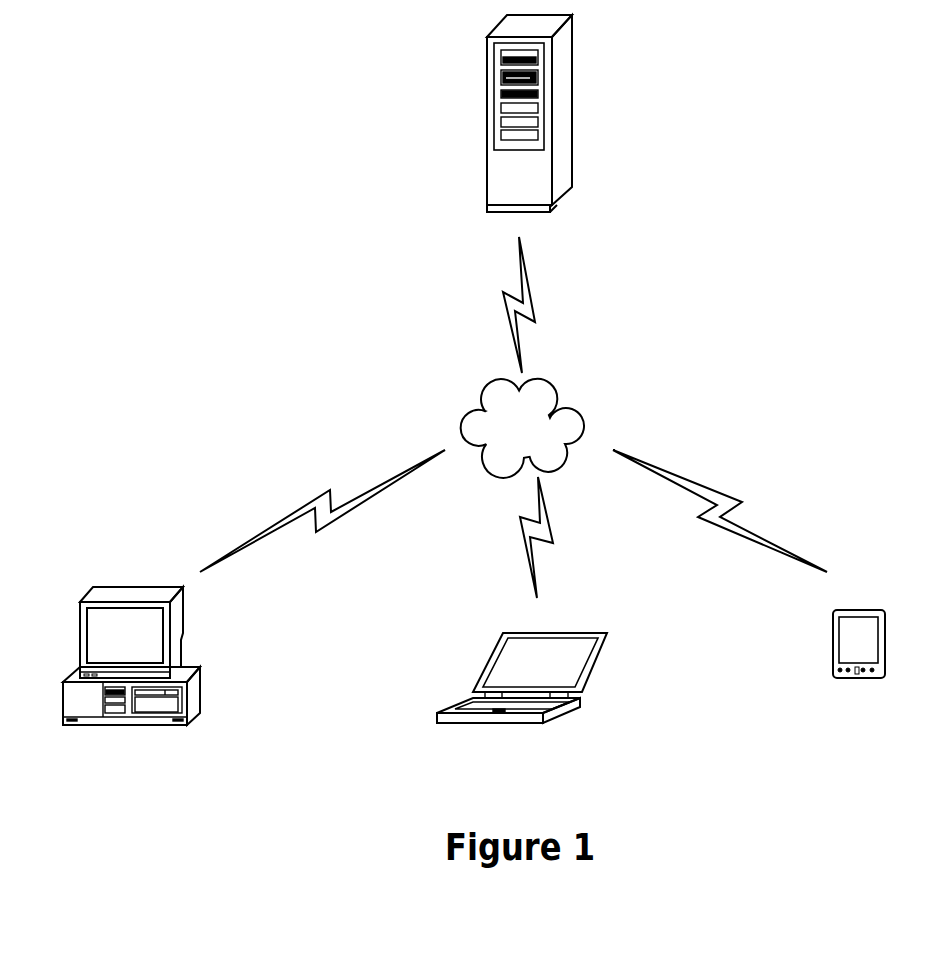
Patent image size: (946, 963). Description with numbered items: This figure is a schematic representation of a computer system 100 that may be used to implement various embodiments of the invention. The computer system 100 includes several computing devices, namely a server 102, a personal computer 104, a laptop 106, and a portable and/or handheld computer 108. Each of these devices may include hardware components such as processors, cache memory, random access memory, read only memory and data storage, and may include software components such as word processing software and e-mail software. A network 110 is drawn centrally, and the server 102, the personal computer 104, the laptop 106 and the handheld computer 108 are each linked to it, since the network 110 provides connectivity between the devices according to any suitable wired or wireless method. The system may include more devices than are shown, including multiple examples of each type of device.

The computer system 100 is at (800, 97).
The server 102 is at (575, 82).
The personal computer 104 is at (148, 585).
The laptop 106 is at (593, 633).
The portable and/or handheld computer 108 is at (870, 610).
The network 110 is at (580, 412).